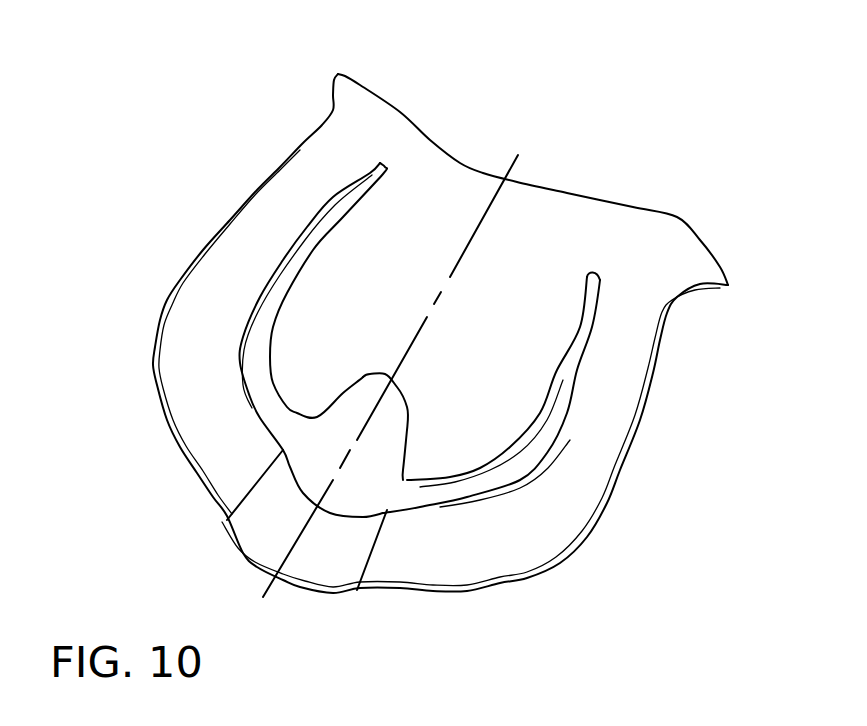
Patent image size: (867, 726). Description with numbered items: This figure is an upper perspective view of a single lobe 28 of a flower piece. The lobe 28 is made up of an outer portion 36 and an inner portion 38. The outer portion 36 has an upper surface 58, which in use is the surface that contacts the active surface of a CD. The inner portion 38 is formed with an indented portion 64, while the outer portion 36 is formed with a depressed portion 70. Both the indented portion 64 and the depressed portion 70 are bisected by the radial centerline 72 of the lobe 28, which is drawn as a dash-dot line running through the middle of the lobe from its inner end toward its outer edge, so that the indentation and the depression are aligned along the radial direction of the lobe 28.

The lobe 28 is at (604, 96).
The outer portion 36 is at (592, 478).
The inner portion 38 is at (492, 349).
The upper surface 58 is at (527, 543).
The indented portion 64 is at (403, 430).
The depressed portion 70 is at (312, 566).
The radial centerline 72 is at (487, 212).